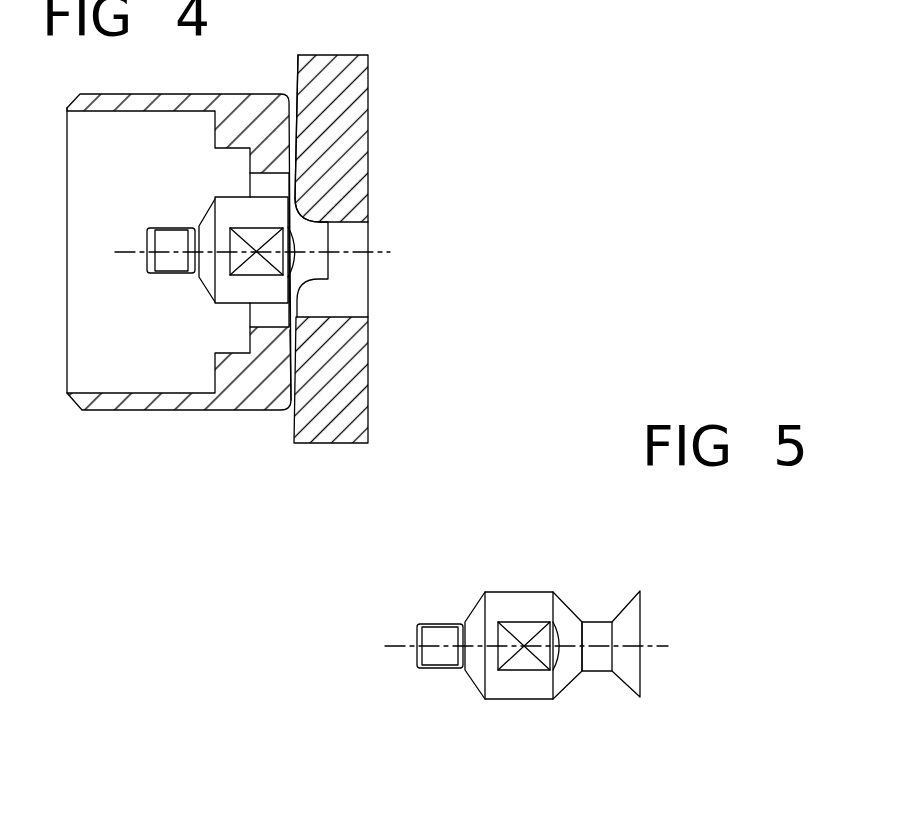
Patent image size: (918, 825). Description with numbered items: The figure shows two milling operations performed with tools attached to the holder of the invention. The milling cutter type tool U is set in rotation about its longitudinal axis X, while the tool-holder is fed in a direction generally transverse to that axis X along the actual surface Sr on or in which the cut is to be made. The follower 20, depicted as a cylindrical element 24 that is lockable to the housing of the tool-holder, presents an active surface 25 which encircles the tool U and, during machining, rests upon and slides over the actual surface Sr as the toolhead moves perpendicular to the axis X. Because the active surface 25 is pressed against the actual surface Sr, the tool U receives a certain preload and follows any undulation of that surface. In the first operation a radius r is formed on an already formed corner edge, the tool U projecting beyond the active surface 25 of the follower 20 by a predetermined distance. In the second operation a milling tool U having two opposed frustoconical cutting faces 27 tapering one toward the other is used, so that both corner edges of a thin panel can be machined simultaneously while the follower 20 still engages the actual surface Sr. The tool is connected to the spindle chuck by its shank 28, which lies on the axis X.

In FIG. 4, the follower 20 is at (300, 356).
In FIG. 4, the cylindrical element 24 is at (157, 410).
In FIG. 4, the active surface 25 is at (297, 150).
In FIG. 4, the frustoconical cutting face 27 is at (304, 230).
In FIG. 5, the frustoconical cutting face 27 is at (567, 625).
In FIG. 4, the radius r is at (303, 213).
In FIG. 4, the milling cutter type tool U is at (340, 268).
In FIG. 5, the milling cutter type tool U is at (577, 598).
In FIG. 4, the actual surface Sr is at (293, 382).
In FIG. 4, the longitudinal axis X is at (128, 252).
In FIG. 5, the longitudinal axis X is at (400, 648).
In FIG. 5, the shank 28 is at (595, 658).